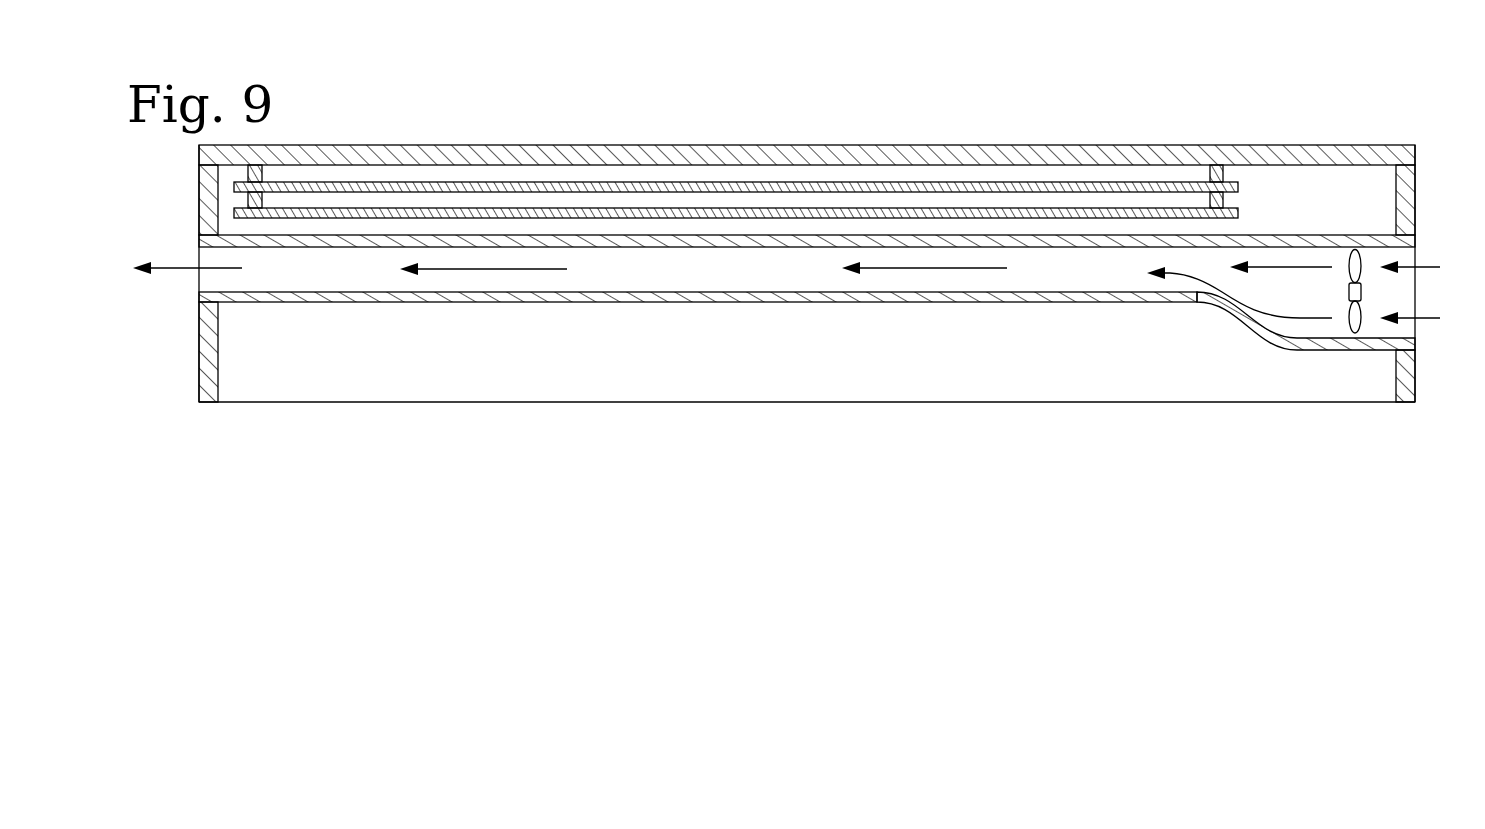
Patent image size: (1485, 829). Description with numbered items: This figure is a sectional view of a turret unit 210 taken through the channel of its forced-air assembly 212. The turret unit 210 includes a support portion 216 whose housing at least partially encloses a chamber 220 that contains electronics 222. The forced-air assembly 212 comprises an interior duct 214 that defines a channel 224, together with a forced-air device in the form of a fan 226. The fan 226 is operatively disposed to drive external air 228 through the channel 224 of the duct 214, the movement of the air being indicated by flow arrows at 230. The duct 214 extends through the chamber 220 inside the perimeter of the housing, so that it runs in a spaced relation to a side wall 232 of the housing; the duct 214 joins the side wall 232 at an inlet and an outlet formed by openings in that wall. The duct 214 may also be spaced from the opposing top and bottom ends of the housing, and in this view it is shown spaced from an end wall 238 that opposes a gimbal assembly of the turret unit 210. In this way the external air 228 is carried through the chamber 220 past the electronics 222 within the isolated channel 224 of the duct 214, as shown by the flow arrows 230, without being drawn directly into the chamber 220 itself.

The turret unit 210 is at (951, 99).
The support portion 216 is at (937, 127).
The end wall 238 is at (598, 145).
The side wall 232 is at (198, 207).
The chamber 220 is at (226, 344).
The forced-air assembly 212 is at (1045, 322).
The electronics 222 is at (1250, 201).
The channel 224 is at (655, 288).
The interior duct 214 is at (1144, 309).
The flow arrows 230 is at (995, 262).
The fan 226 is at (1345, 320).
The external air 228 is at (1466, 304).